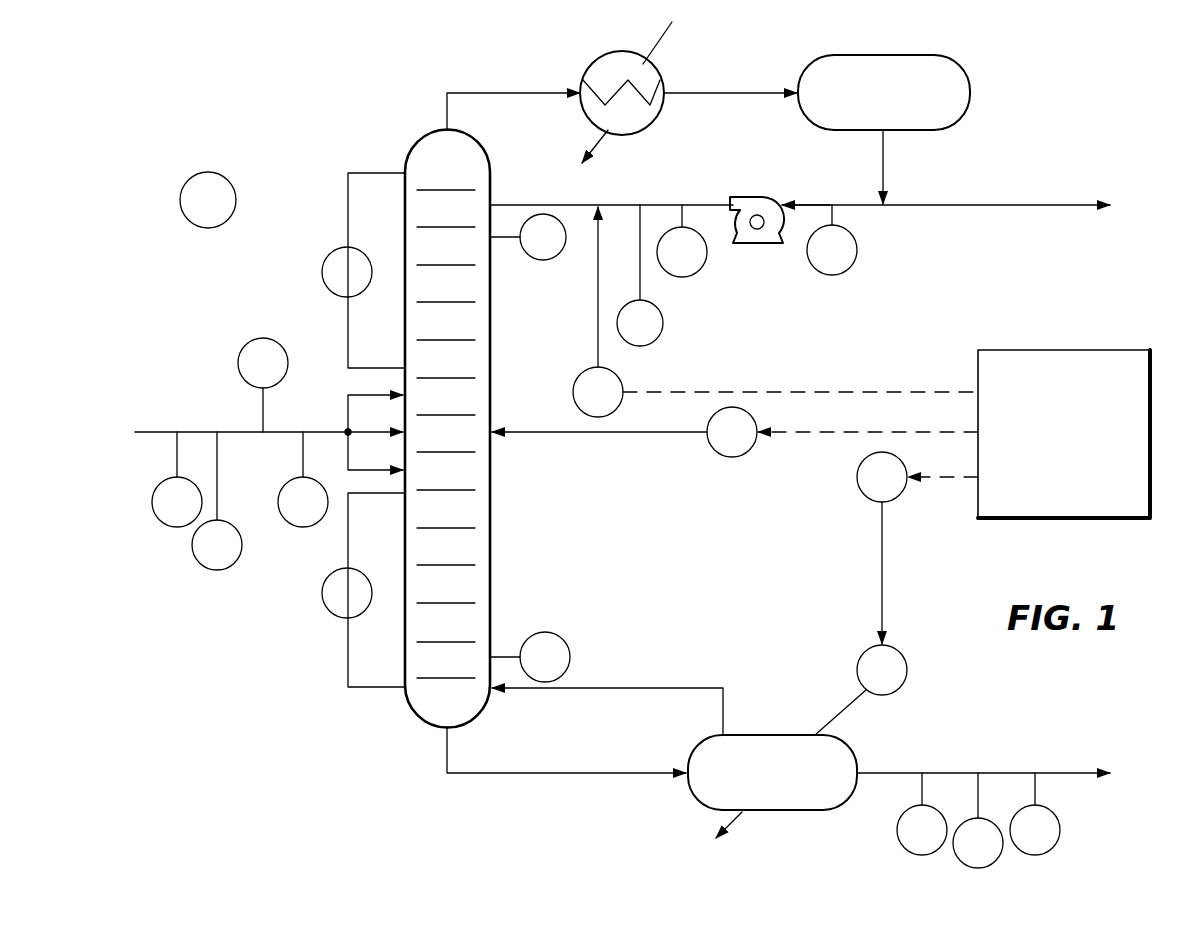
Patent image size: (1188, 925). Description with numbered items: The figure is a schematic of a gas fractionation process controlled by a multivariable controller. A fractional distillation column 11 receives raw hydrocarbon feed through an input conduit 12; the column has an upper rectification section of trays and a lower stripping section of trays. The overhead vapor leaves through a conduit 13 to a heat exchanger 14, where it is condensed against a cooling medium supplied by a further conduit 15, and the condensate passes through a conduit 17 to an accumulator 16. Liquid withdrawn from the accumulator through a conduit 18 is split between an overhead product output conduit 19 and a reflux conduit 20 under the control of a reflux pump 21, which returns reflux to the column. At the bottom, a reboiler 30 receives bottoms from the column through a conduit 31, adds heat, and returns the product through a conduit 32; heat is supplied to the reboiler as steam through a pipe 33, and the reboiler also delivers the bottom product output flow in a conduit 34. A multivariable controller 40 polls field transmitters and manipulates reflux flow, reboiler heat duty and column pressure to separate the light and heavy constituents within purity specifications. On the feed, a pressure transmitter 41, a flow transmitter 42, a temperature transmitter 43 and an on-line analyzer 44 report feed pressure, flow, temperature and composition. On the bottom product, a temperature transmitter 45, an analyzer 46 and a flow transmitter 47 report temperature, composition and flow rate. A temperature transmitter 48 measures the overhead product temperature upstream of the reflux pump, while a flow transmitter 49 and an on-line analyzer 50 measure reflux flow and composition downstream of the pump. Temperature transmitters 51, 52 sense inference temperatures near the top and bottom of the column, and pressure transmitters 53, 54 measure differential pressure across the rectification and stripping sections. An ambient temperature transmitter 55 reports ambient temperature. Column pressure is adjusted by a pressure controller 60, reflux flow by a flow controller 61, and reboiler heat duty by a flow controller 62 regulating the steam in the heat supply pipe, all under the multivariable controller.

The fractional distillation column 11 is at (490, 535).
The input conduit 12 is at (320, 430).
The overhead vapor conduit 13 is at (510, 97).
The heat exchanger 14 is at (655, 50).
The cooling medium conduit 15 is at (653, 46).
The accumulator 16 is at (896, 55).
The condensed overhead conduit 17 is at (736, 97).
The accumulator outlet conduit 18 is at (888, 150).
The overhead product output conduit 19 is at (943, 207).
The reflux conduit 20 is at (814, 204).
The reflux pump 21 is at (770, 243).
The reboiler 30 is at (778, 812).
The bottoms conduit 31 is at (578, 775).
The reboiler return conduit 32 is at (675, 686).
The reboiler heat supply pipe 33 is at (840, 716).
The bottom product output conduit 34 is at (1055, 772).
The multivariable controller 40 is at (1100, 350).
The pressure transmitter 41 is at (248, 345).
The flow transmitter 42 is at (152, 508).
The temperature transmitter 43 is at (325, 518).
The on-line analyzer 44 is at (242, 542).
The temperature transmitter 45 is at (1058, 817).
The analyzer 46 is at (978, 868).
The flow transmitter 47 is at (910, 852).
The temperature transmitter 48 is at (857, 252).
The flow transmitter 49 is at (682, 308).
The on-line analyzer 50 is at (705, 263).
The temperature transmitter 51 is at (540, 265).
The temperature transmitter 52 is at (566, 642).
The pressure transmitter 53 is at (322, 258).
The pressure transmitter 54 is at (323, 604).
The ambient temperature transmitter 55 is at (236, 195).
The pressure controller 60 is at (740, 457).
The flow controller 61 is at (615, 370).
The flow controller 62 is at (895, 498).